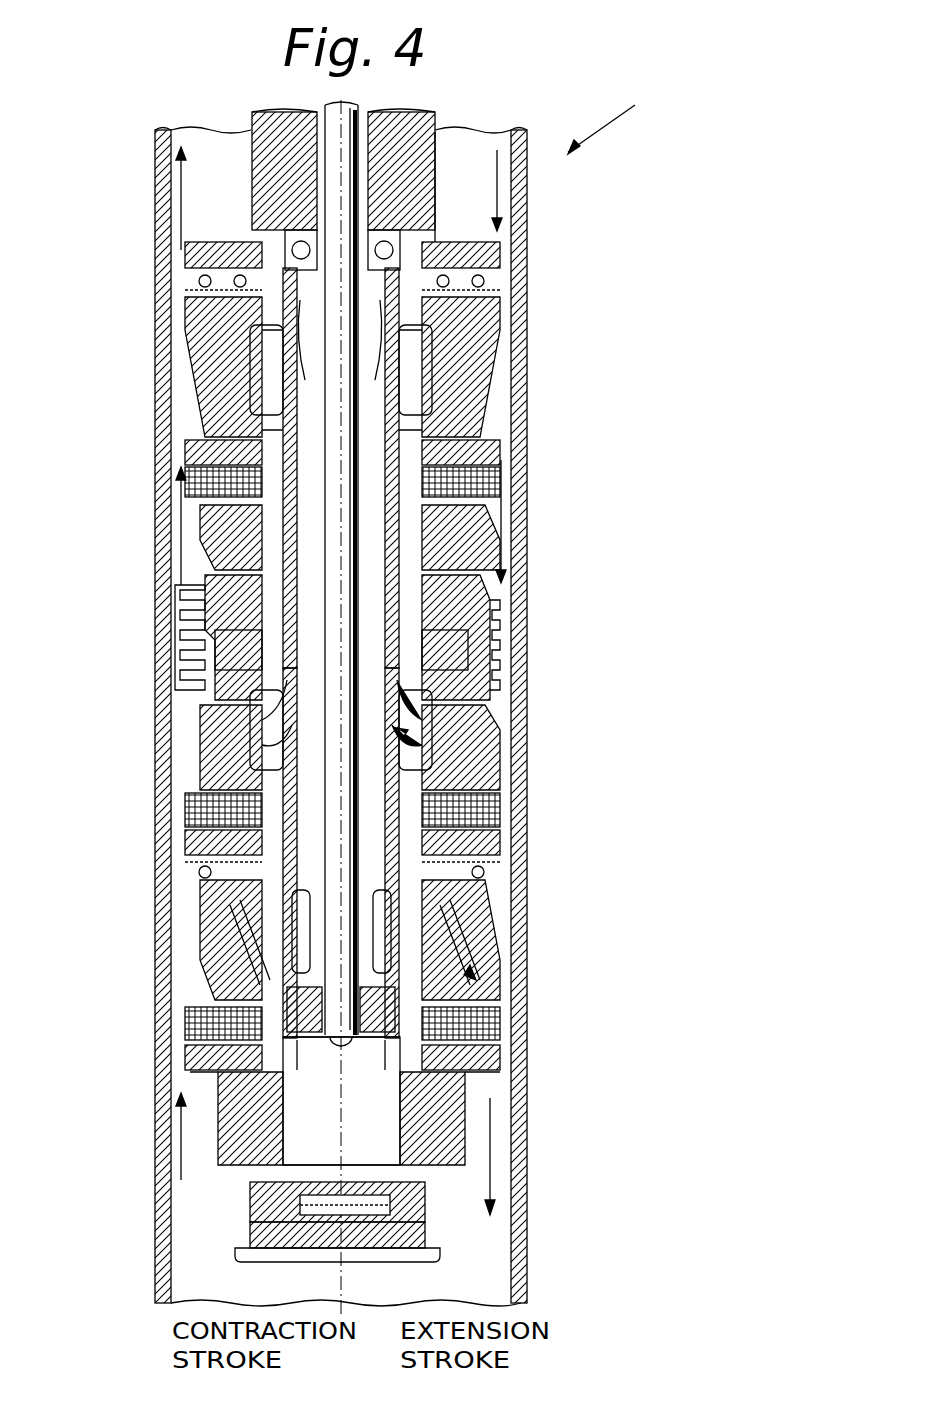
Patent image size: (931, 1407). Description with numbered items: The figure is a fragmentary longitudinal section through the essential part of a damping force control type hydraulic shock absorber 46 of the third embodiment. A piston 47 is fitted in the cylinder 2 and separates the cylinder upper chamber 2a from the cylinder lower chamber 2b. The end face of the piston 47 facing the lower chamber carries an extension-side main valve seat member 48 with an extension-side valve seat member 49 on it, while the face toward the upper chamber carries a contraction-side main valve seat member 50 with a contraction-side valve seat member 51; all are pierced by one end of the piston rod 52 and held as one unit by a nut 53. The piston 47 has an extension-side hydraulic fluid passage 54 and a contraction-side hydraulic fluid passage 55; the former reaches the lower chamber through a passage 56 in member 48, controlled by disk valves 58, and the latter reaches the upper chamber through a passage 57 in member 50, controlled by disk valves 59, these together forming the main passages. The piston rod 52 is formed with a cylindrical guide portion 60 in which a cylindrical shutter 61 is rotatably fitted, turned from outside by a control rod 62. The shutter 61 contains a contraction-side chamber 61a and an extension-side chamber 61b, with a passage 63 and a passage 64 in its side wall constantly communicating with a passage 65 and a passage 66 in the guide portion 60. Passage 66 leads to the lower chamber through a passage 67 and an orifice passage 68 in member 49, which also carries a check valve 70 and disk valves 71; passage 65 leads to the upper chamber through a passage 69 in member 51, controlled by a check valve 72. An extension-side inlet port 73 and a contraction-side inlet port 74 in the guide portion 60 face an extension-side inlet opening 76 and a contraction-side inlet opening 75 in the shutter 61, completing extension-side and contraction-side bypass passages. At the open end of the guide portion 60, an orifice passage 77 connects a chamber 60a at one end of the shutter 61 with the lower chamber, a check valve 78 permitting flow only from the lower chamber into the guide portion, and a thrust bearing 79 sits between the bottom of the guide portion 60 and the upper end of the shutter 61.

The cylinder 2 is at (520, 135).
The cylinder upper chamber 2a is at (468, 135).
The cylinder lower chamber 2b is at (490, 1236).
The damping force control type hydraulic shock absorber 46 is at (678, 100).
The piston 47 is at (490, 635).
The extension-side main valve seat member 48 is at (470, 785).
The extension-side valve seat member 49 is at (512, 940).
The contraction-side main valve seat member 50 is at (500, 520).
The contraction-side valve seat member 51 is at (497, 352).
The piston rod 52 is at (276, 137).
The nut 53 is at (250, 1242).
The extension-side hydraulic fluid passage 54 is at (433, 570).
The contraction-side hydraulic fluid passage 55 is at (225, 710).
The passage 56 is at (466, 775).
The passage 57 is at (245, 540).
The disk valves 58 is at (468, 835).
The disk valves 59 is at (230, 468).
The guide portion 60 is at (300, 1110).
The chamber 60a is at (370, 1120).
The shutter 61 is at (460, 1060).
The contraction-side chamber 61a is at (380, 455).
The extension-side chamber 61b is at (310, 845).
The control rod 62 is at (356, 112).
The passage 63 is at (405, 374).
The passage 64 is at (290, 960).
The passage 65 is at (380, 420).
The passage 66 is at (270, 905).
The passage 67 is at (500, 1010).
The orifice passage 68 is at (475, 915).
The passage 69 is at (460, 325).
The check valve 70 is at (470, 869).
The disk valves 71 is at (480, 1045).
The check valve 72 is at (495, 262).
The extension-side inlet port 73 is at (385, 702).
The contraction-side inlet port 74 is at (204, 617).
The contraction-side inlet opening 75 is at (210, 580).
The extension-side inlet opening 76 is at (380, 728).
The orifice passage 77 is at (343, 1256).
The check valve 78 is at (368, 1206).
The thrust bearing 79 is at (255, 202).